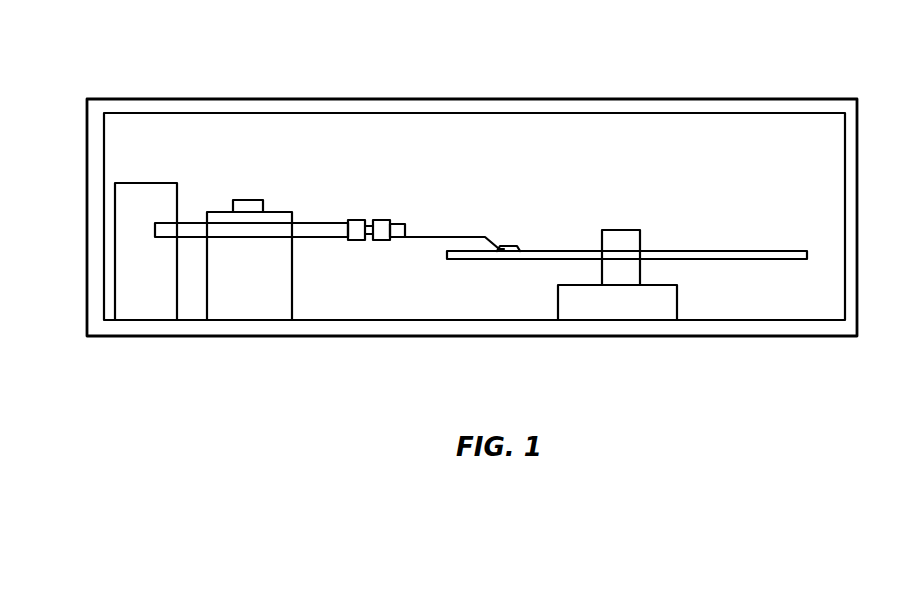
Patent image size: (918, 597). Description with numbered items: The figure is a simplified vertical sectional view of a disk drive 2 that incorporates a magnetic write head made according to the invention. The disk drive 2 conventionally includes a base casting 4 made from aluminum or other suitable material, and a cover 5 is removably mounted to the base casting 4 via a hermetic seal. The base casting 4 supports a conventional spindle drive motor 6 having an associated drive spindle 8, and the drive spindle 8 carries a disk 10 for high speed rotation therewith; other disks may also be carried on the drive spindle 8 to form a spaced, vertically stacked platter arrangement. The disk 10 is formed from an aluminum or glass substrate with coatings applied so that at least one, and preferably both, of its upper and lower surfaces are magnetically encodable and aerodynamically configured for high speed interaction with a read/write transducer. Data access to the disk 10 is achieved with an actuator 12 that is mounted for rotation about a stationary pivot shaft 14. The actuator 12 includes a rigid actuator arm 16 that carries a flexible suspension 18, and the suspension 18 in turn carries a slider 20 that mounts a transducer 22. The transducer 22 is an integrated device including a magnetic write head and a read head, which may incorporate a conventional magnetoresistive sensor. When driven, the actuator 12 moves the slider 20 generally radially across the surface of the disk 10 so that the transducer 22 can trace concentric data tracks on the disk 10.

The disk drive 2 is at (118, 45).
The base casting 4 is at (423, 336).
The cover 5 is at (427, 100).
The spindle drive motor 6 is at (677, 306).
The drive spindle 8 is at (620, 230).
The disk 10 is at (760, 251).
The actuator 12 is at (292, 290).
The pivot shaft 14 is at (247, 200).
The actuator arm 16 is at (320, 222).
The suspension 18 is at (428, 237).
The slider 20 is at (502, 247).
The transducer 22 is at (520, 248).